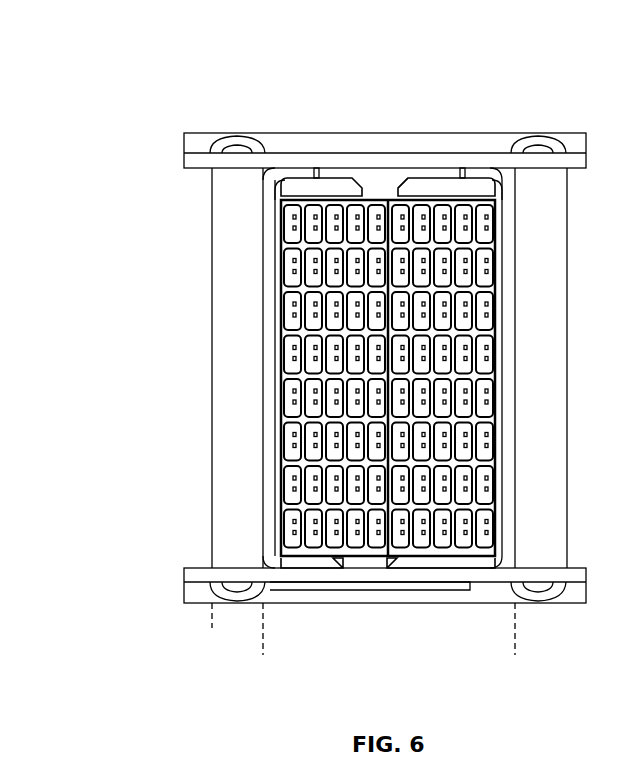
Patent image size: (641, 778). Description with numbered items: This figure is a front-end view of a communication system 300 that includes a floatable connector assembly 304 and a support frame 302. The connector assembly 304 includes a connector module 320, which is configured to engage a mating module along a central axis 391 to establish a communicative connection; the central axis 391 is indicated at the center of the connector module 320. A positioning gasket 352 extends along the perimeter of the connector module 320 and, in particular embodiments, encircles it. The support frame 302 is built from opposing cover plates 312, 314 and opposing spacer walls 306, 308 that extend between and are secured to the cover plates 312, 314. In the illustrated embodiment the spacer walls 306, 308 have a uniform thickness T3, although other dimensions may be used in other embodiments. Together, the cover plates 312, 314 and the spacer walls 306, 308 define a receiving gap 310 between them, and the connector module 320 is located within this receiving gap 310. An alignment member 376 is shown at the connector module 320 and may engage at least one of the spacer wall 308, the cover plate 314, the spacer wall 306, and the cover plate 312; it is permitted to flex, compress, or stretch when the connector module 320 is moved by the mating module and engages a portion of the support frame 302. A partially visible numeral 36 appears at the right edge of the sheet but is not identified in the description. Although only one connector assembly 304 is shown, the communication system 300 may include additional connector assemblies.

The communication system 300 is at (557, 60).
The support frame 302 is at (138, 133).
The floatable connector assembly 304 is at (518, 278).
The spacer wall 306 is at (213, 368).
The spacer wall 308 is at (568, 428).
The receiving gap 310 is at (515, 655).
The cover plate 312 is at (300, 160).
The cover plate 314 is at (338, 572).
The connector module 320 is at (497, 421).
The positioning gasket 352 is at (482, 170).
The alignment member 376 is at (500, 534).
The central axis 391 is at (392, 373).
The side member 36 is at (629, 390).
The thickness T3 is at (263, 628).